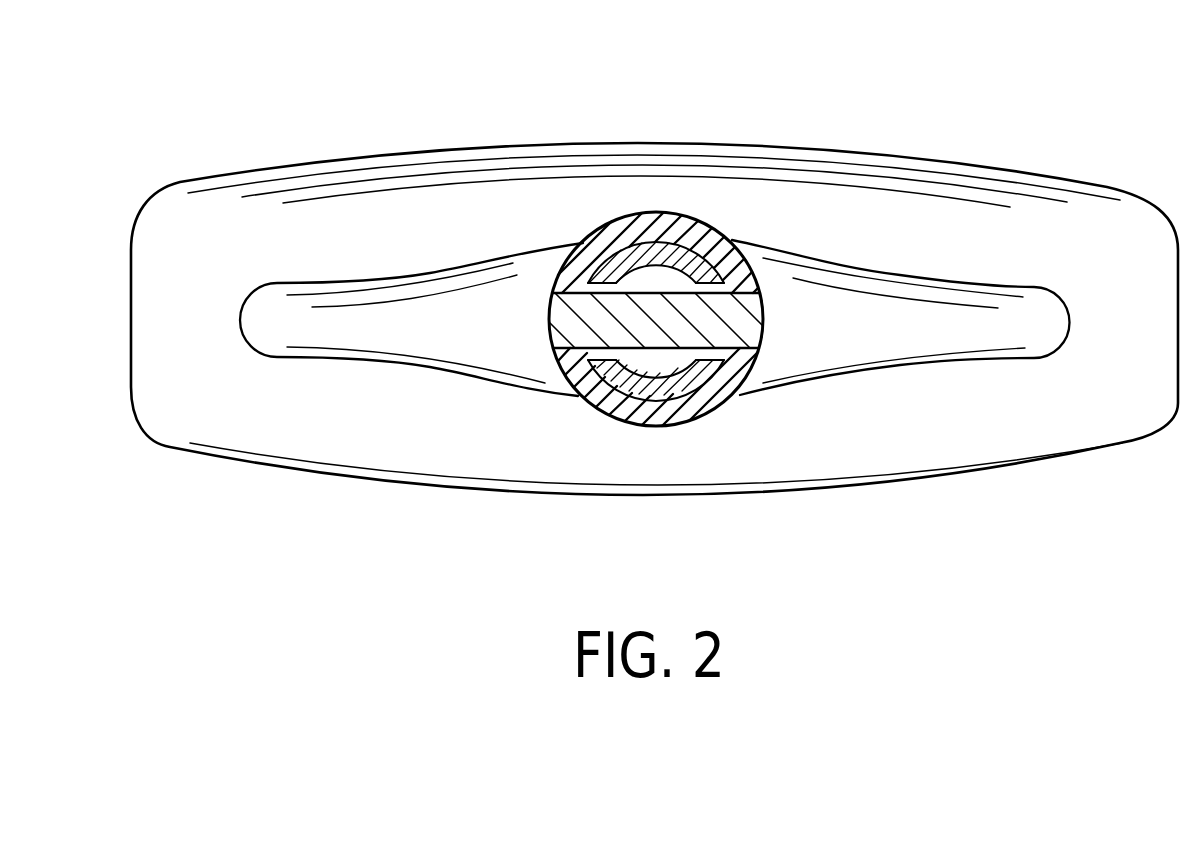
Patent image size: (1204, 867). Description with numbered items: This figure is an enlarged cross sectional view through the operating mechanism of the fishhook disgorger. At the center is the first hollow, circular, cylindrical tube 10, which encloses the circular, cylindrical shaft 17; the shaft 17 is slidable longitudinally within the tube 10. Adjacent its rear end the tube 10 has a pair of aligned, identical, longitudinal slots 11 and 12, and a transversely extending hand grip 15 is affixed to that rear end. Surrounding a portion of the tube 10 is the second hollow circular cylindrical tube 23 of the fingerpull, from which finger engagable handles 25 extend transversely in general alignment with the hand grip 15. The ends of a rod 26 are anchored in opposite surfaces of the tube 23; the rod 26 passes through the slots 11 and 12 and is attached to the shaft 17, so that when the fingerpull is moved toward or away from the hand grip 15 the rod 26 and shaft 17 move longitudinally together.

The first hollow, circular, cylindrical tube 10 is at (683, 382).
The longitudinal slot 11 is at (745, 255).
The longitudinal slot 12 is at (573, 260).
The hand grip 15 is at (1115, 273).
The shaft 17 is at (654, 273).
The second hollow circular cylindrical tube 23 is at (567, 397).
The finger engagable handles 25 is at (975, 320).
The rod 26 is at (767, 330).